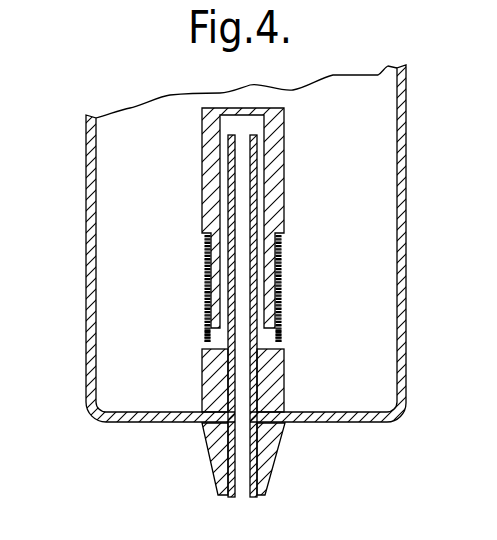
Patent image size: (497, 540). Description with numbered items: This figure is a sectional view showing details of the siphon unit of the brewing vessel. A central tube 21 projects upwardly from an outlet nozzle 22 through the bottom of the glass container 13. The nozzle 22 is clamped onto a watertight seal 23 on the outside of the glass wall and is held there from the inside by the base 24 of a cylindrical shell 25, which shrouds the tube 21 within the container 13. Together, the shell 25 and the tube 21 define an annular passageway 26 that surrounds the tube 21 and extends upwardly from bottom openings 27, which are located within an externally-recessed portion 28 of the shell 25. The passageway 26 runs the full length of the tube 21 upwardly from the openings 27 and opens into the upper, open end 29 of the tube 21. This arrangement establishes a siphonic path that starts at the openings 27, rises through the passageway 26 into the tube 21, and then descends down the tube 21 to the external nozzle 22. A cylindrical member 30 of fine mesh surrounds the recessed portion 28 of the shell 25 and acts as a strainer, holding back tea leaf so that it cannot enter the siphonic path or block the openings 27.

The glass container 13 is at (90, 357).
The central tube 21 is at (232, 183).
The outlet nozzle 22 is at (218, 460).
The watertight seal 23 is at (285, 425).
The base 24 is at (275, 388).
The cylindrical shell 25 is at (282, 183).
The annular passageway 26 is at (262, 152).
The bottom openings 27 is at (208, 336).
The externally-recessed portion 28 is at (282, 252).
The upper open end 29 is at (238, 124).
The cylindrical member 30 is at (204, 258).